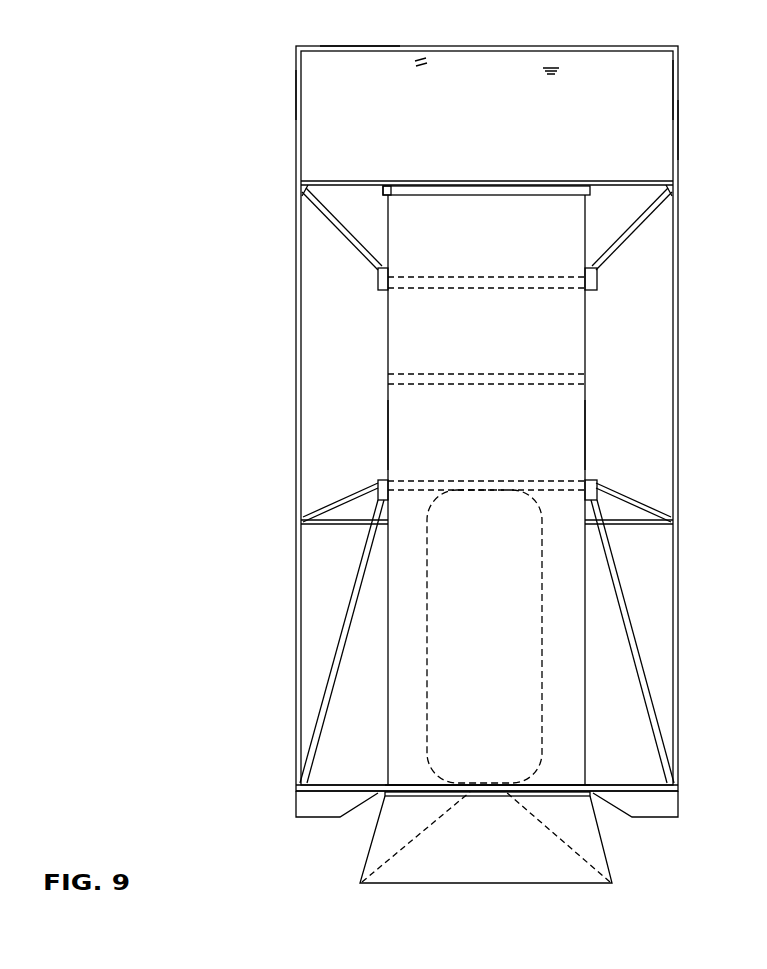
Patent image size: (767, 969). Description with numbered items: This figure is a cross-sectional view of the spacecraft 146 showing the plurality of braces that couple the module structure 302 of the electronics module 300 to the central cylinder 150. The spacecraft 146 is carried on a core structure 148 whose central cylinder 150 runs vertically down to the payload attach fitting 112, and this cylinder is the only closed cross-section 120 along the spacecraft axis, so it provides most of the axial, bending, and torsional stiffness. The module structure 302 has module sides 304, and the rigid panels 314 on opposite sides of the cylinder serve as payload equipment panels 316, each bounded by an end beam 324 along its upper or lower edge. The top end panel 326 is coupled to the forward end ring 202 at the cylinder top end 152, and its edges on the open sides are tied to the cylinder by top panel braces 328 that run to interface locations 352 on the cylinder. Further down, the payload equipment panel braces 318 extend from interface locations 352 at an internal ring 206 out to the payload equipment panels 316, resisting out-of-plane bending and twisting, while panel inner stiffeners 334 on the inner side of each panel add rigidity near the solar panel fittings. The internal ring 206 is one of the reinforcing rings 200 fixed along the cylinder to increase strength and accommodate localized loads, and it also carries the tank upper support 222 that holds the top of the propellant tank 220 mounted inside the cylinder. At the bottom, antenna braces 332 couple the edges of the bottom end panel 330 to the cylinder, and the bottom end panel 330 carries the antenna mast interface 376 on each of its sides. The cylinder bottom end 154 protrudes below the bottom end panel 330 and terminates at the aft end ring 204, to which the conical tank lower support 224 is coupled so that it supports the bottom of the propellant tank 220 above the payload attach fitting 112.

The electronics module 300 is at (676, 49).
The module structure 302 is at (677, 89).
The module sides 304 is at (677, 128).
The end beam 324 is at (298, 47).
The spacecraft 146 is at (297, 94).
The payload equipment panels 316 is at (421, 60).
The rigid panels 314 is at (551, 66).
The top end panel 326 is at (638, 181).
The cylinder top end 152 is at (592, 191).
The forward end ring 202 is at (383, 193).
The top panel braces 328 is at (340, 232).
The interface locations 352 is at (377, 282).
The core structure 148 is at (410, 321).
The central cylinder 150 is at (405, 362).
The closed cross-section 120 is at (405, 428).
The reinforcing rings 200 is at (560, 290).
The internal ring 206 is at (590, 380).
The tank upper support 222 is at (548, 488).
The payload equipment panel braces 318 is at (345, 503).
The panel inner stiffeners 334 is at (340, 523).
The antenna braces 332 is at (336, 663).
The propellant tank 220 is at (545, 624).
The bottom end panel 330 is at (642, 789).
The cylinder bottom end 154 is at (385, 797).
The antenna mast interface 376 is at (303, 806).
The aft end ring 204 is at (592, 797).
The payload attach fitting 112 is at (606, 860).
The conical tank lower support 224 is at (390, 857).